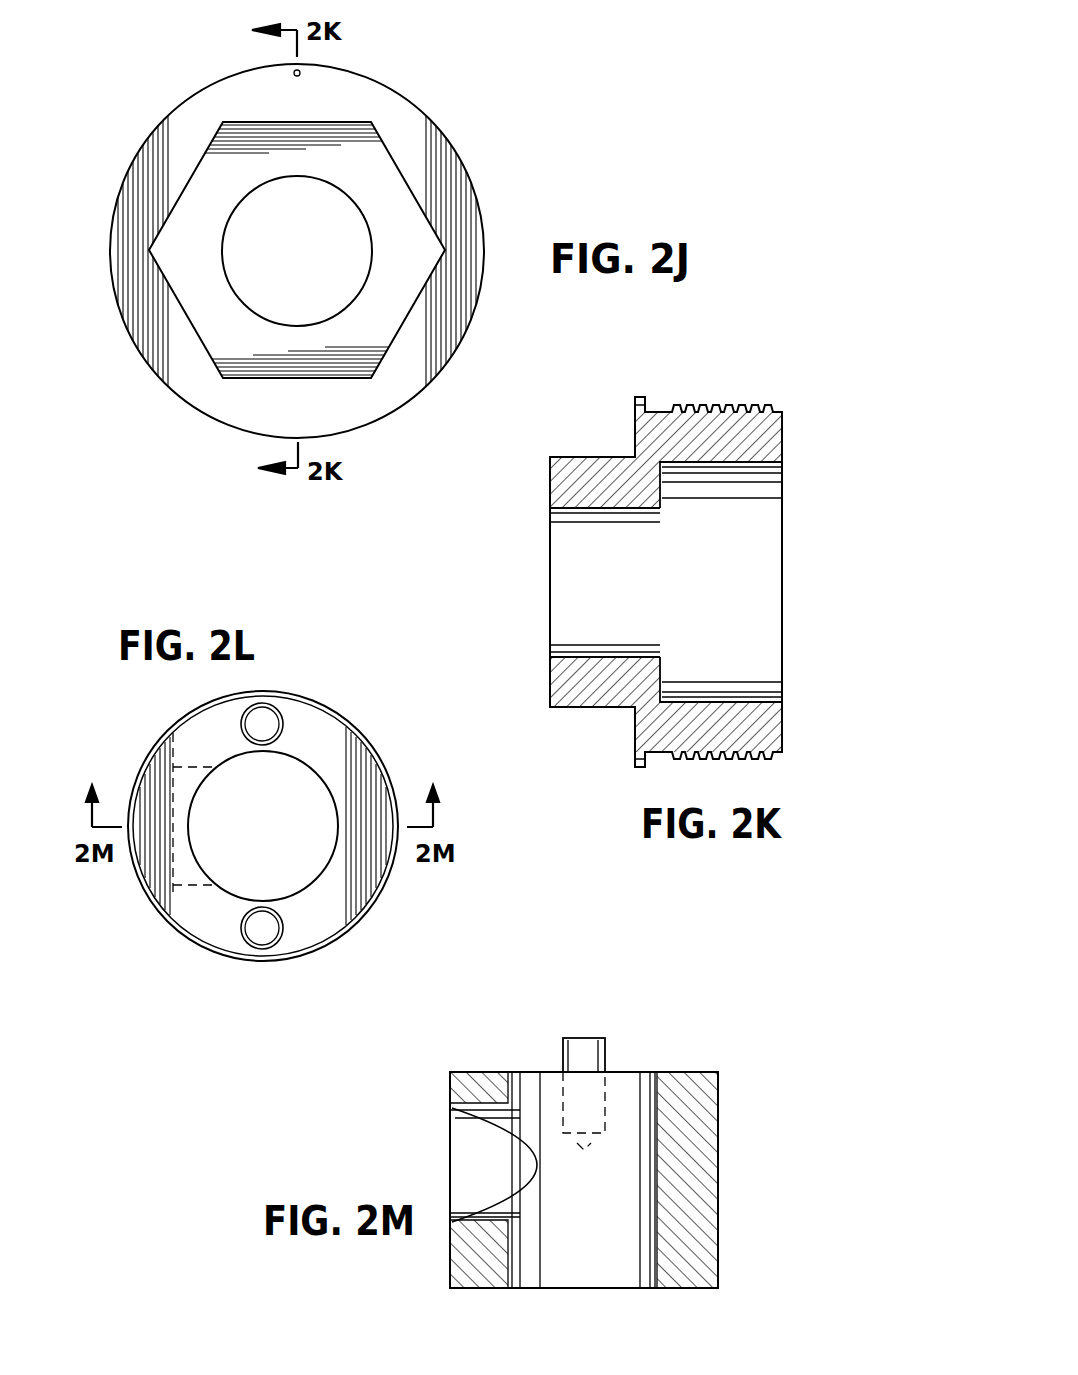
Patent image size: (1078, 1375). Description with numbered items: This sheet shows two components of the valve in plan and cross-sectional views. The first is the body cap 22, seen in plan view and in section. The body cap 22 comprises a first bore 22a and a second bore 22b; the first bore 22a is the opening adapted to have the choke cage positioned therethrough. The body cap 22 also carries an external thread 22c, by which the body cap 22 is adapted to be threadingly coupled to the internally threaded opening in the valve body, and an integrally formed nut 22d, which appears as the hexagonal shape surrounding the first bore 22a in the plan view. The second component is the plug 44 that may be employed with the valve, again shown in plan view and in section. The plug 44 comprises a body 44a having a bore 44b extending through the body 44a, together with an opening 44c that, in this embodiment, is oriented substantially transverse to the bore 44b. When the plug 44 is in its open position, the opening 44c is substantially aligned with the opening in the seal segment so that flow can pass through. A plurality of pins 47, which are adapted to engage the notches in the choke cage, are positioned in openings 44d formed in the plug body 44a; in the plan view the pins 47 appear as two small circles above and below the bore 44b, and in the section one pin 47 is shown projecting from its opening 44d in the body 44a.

In FIG. 2J, the body cap 22 is at (489, 247).
In FIG. 2K, the body cap 22 is at (594, 733).
In FIG. 2J, the first bore 22a is at (227, 233).
In FIG. 2K, the first bore 22a is at (578, 510).
In FIG. 2K, the second bore 22b is at (752, 702).
In FIG. 2K, the external thread 22c is at (731, 404).
In FIG. 2J, the integrally formed nut 22d is at (388, 178).
In FIG. 2L, the plug 44 is at (162, 923).
In FIG. 2M, the plug 44 is at (693, 1063).
In FIG. 2L, the body 44a is at (390, 869).
In FIG. 2M, the body 44a is at (718, 1163).
In FIG. 2L, the bore 44b is at (307, 767).
In FIG. 2M, the bore 44b is at (657, 1253).
In FIG. 2L, the opening 44c is at (163, 738).
In FIG. 2M, the opening 44c is at (467, 1108).
In FIG. 2M, the openings 44d is at (552, 1088).
In FIG. 2L, the pins 47 is at (273, 724).
In FIG. 2M, the pins 47 is at (595, 1061).